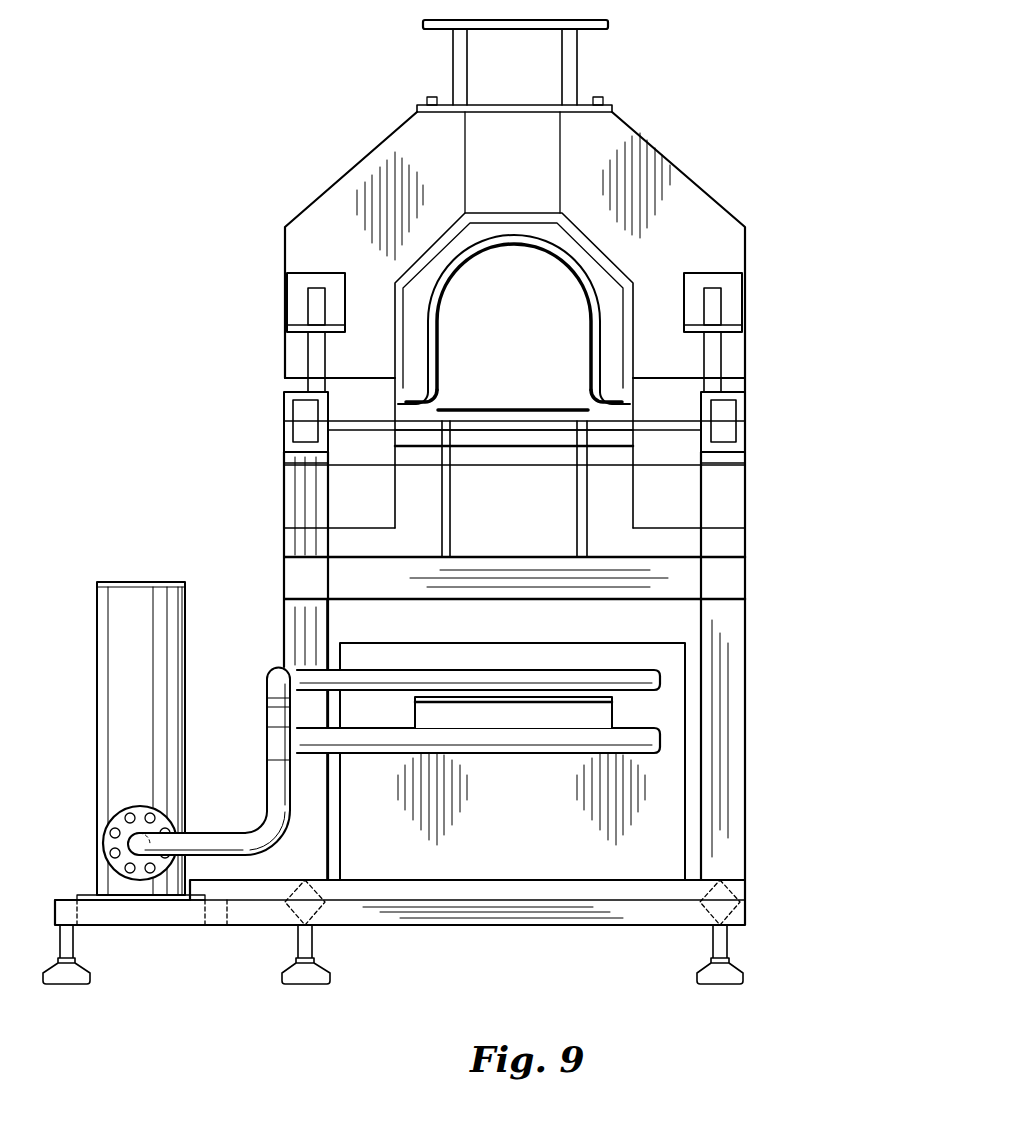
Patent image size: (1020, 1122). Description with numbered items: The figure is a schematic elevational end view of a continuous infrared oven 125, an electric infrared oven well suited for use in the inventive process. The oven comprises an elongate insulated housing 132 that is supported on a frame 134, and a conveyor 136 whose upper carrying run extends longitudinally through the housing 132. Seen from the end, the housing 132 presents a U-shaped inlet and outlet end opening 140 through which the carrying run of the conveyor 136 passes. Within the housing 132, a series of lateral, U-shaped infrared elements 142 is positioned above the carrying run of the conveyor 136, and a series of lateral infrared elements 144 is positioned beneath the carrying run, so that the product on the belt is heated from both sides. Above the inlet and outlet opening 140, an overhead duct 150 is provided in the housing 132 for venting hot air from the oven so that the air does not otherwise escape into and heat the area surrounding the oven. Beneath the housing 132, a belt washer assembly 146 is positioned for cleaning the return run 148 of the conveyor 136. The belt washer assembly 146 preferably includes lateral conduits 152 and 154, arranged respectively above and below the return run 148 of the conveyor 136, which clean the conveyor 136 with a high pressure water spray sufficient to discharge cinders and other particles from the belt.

The continuous infrared oven 125 is at (318, 170).
The elongate insulated housing 132 is at (405, 142).
The frame 134 is at (727, 813).
The conveyor 136 is at (513, 384).
The inlet and outlet end openings 140 is at (465, 285).
The U-shaped infrared elements 142 is at (588, 297).
The infrared elements 144 is at (552, 447).
The belt washer assembly 146 is at (670, 653).
The return run 148 is at (612, 717).
The overhead ducts 150 is at (555, 75).
The lateral conduit 152 is at (363, 673).
The lateral conduit 154 is at (510, 742).